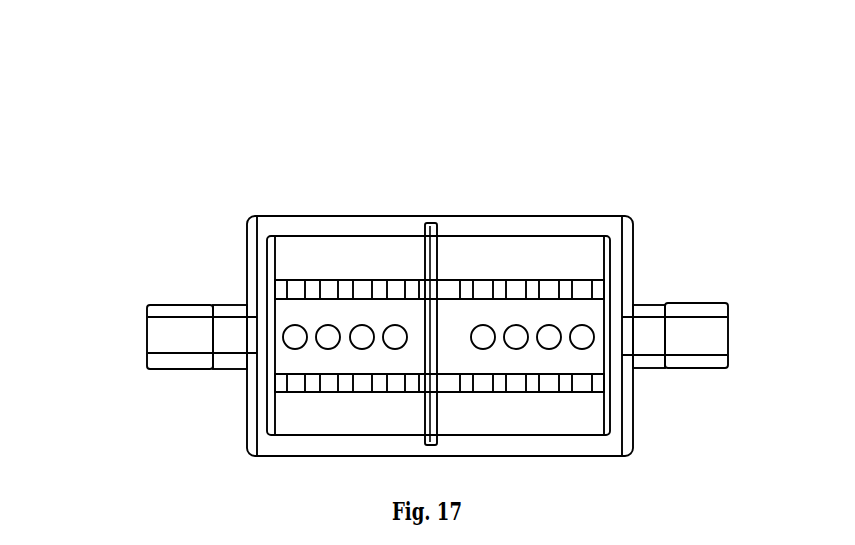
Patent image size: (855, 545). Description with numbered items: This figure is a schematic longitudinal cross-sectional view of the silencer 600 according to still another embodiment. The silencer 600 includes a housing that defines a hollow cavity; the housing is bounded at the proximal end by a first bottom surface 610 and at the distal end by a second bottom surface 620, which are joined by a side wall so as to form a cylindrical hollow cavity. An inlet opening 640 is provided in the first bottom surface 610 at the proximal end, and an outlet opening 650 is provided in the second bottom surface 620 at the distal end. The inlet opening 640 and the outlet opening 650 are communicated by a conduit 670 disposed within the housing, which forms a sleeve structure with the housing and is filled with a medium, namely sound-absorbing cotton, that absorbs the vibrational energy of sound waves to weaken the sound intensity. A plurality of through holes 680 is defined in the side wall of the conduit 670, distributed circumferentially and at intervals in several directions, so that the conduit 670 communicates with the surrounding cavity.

The silencer 600 is at (731, 120).
The first bottom surface 610 is at (248, 258).
The second bottom surface 620 is at (634, 255).
The inlet opening 640 is at (143, 335).
The outlet opening 650 is at (731, 328).
The conduit 670 is at (362, 310).
The through holes 680 is at (478, 373).